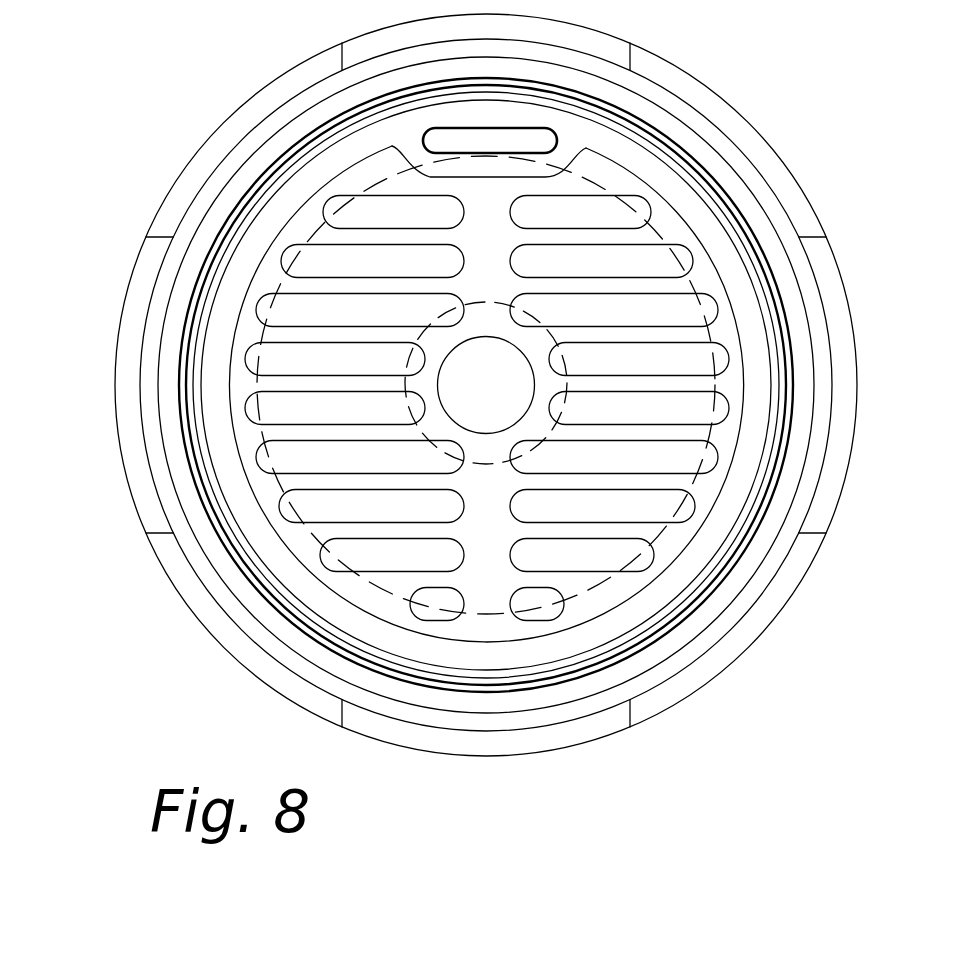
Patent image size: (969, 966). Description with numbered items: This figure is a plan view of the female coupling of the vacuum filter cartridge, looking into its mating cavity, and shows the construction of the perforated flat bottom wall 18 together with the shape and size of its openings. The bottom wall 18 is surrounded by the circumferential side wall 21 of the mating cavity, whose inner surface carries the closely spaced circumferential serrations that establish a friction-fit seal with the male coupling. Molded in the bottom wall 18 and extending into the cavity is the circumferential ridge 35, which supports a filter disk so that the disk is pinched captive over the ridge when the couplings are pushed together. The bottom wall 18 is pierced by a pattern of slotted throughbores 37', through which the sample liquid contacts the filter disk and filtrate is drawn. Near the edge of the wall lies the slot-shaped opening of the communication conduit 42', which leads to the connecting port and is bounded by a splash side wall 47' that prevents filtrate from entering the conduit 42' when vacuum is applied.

The circumferential side wall 21 is at (144, 292).
The circumferential ridge 35 is at (191, 343).
The perforated flat bottom wall 18 is at (302, 540).
The splash side wall 47' is at (489, 201).
The communication conduit 42' is at (376, 89).
The slotted throughbores 37' is at (541, 429).